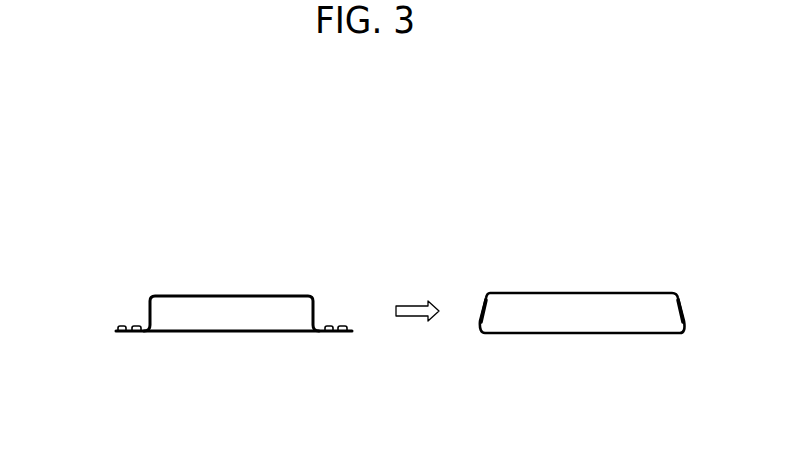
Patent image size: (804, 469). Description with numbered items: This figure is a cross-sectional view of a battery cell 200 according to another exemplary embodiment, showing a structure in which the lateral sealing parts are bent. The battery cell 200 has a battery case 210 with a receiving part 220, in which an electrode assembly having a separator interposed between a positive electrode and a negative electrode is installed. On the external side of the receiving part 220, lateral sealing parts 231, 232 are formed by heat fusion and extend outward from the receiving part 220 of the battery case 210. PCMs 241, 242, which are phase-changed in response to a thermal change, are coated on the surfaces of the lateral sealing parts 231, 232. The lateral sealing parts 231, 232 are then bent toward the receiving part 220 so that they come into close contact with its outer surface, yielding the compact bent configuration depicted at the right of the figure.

The battery cell 200 is at (134, 178).
The battery case 210 is at (238, 333).
The receiving part 220 is at (270, 310).
The lateral sealing part 231 is at (125, 328).
The lateral sealing part 232 is at (335, 333).
The PCM 241 is at (126, 327).
The PCM 242 is at (334, 327).